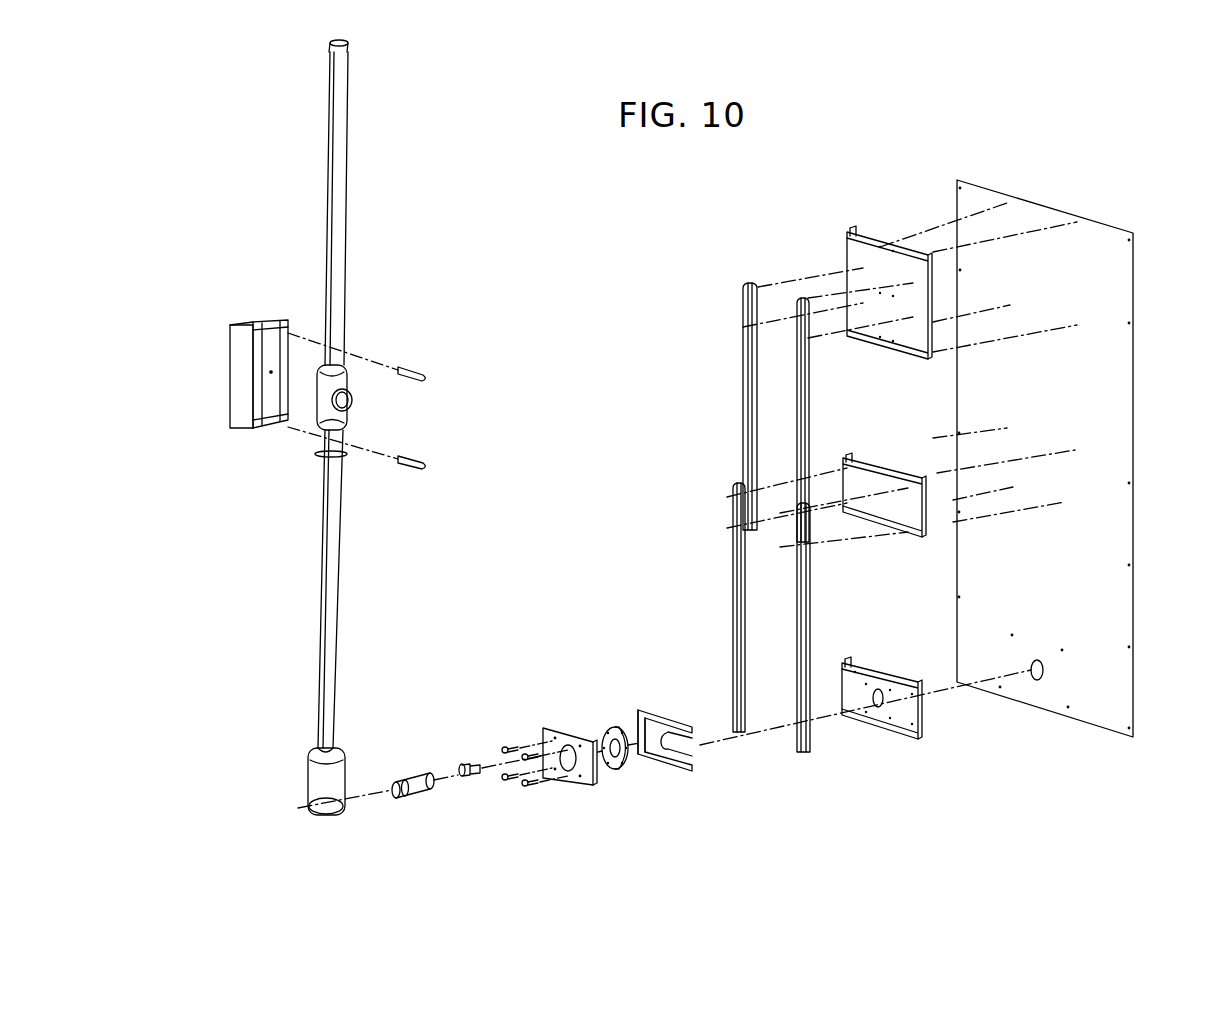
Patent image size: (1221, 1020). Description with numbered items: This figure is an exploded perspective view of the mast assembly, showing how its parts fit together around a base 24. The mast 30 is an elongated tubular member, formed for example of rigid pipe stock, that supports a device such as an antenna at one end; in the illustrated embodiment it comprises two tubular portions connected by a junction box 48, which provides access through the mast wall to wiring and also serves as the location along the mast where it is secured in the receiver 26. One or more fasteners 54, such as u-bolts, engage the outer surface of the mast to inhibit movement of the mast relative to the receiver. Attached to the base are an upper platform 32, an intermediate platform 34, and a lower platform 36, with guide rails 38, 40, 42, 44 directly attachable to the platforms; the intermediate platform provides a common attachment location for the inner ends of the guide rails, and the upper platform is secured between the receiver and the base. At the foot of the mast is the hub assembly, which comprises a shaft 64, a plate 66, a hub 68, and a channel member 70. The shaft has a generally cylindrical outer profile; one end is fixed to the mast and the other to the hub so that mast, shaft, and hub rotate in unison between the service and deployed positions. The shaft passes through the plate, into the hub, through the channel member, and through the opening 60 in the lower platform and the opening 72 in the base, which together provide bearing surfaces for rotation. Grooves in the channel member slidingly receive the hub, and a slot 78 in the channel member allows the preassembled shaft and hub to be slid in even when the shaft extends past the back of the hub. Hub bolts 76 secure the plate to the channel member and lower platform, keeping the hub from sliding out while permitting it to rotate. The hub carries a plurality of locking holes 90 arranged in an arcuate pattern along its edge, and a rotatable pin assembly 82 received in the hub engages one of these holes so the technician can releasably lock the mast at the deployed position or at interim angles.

The base 24 is at (1135, 607).
The receiver 26 is at (232, 382).
The mast 30 is at (345, 176).
The upper platform 32 is at (873, 232).
The intermediate platform 34 is at (875, 468).
The lower platform 36 is at (925, 713).
The guide rail 38 is at (812, 597).
The guide rail 40 is at (810, 390).
The guide rail 42 is at (732, 565).
The guide rail 44 is at (742, 400).
The junction box 48 is at (352, 412).
The fastener 54 is at (424, 377).
The opening 60 is at (878, 708).
The shaft 64 is at (415, 775).
The plate 66 is at (576, 785).
The hub 68 is at (618, 770).
The channel member 70 is at (667, 770).
The opening 72 is at (1040, 659).
The hub bolt 76 is at (516, 748).
The slot 78 is at (702, 741).
The rotatable pin assembly 82 is at (466, 763).
The locking hole 90 is at (614, 728).